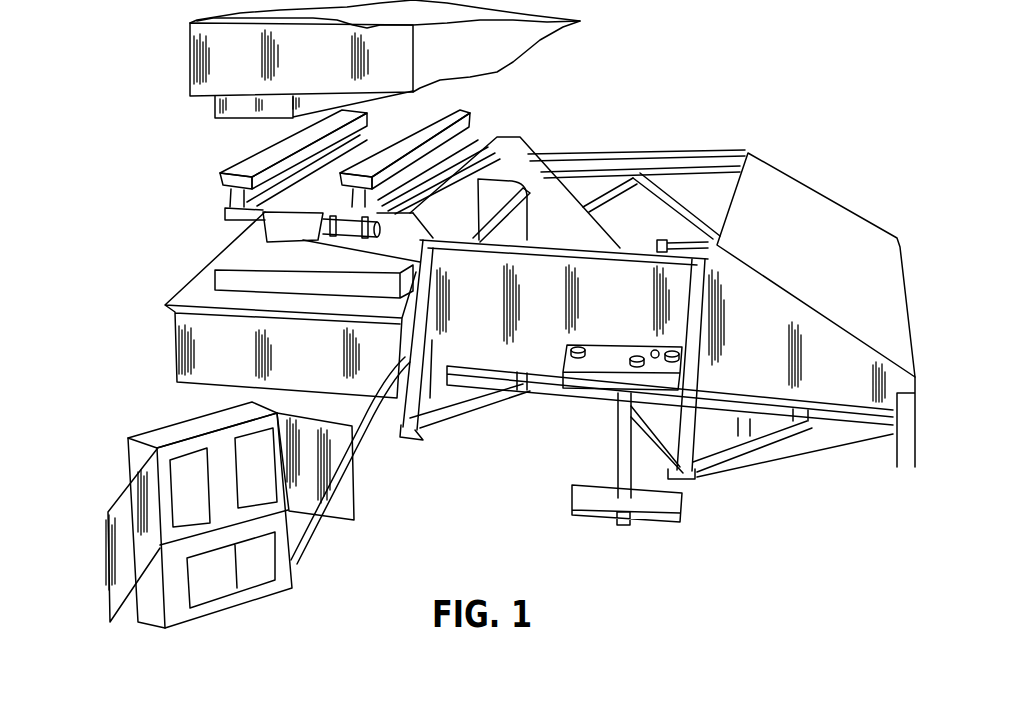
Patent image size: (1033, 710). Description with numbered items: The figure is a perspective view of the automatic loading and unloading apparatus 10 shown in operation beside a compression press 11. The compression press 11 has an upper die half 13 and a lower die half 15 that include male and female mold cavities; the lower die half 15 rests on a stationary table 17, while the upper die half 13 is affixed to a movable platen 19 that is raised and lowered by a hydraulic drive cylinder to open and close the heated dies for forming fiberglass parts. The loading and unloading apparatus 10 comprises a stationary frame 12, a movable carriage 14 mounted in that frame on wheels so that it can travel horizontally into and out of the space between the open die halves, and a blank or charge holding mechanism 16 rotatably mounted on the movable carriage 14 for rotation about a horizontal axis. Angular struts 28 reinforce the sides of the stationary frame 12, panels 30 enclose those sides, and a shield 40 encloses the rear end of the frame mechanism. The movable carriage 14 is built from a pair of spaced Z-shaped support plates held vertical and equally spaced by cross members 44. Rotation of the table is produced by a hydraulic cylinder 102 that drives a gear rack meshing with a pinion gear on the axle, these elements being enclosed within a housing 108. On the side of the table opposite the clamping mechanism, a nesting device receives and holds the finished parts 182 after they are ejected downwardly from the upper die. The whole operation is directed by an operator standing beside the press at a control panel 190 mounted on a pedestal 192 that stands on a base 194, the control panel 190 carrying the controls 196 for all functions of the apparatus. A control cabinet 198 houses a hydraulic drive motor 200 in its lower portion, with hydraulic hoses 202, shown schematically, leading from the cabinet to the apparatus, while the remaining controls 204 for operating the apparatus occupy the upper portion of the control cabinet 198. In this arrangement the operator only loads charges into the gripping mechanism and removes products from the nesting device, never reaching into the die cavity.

The automatic loading and unloading apparatus 10 is at (684, 137).
The compression press 11 is at (145, 127).
The stationary frame 12 is at (730, 150).
The upper die half 13 is at (220, 117).
The movable carriage 14 is at (510, 157).
The lower die half 15 is at (230, 282).
The charge holding mechanism 16 is at (225, 213).
The stationary table 17 is at (177, 345).
The movable platen 19 is at (203, 82).
The angular struts 28 is at (657, 199).
The panels 30 is at (503, 350).
The shield 40 is at (843, 232).
The cross members 44 is at (545, 171).
The hydraulic cylinder 102 is at (347, 231).
The housing 108 is at (275, 226).
The finished parts 182 is at (372, 112).
The control panel 190 is at (583, 382).
The pedestal 192 is at (623, 453).
The base 194 is at (582, 497).
The controls 196 is at (670, 351).
The control cabinet 198 is at (135, 450).
The hydraulic drive motor 200 is at (212, 588).
The hydraulic hoses 202 is at (307, 537).
The controls 204 is at (263, 455).